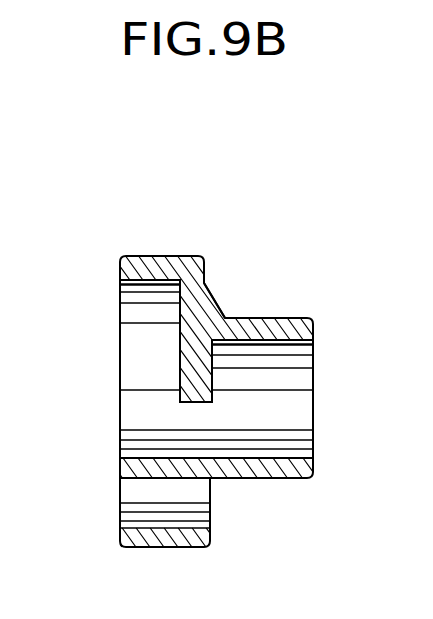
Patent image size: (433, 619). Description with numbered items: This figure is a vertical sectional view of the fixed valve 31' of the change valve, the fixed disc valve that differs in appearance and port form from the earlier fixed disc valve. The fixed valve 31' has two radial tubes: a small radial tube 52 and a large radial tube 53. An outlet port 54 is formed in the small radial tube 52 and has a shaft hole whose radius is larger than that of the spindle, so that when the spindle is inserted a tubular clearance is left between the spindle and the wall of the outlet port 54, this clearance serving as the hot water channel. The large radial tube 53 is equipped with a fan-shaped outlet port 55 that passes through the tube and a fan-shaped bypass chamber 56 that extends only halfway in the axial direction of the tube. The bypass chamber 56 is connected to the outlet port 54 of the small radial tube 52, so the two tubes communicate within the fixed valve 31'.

The large radial tube 53 is at (148, 256).
The fixed valve 31' is at (237, 263).
The outlet port 54 is at (293, 385).
The bypass chamber 56 is at (143, 334).
The outlet port 55 is at (122, 510).
The small radial tube 52 is at (275, 470).